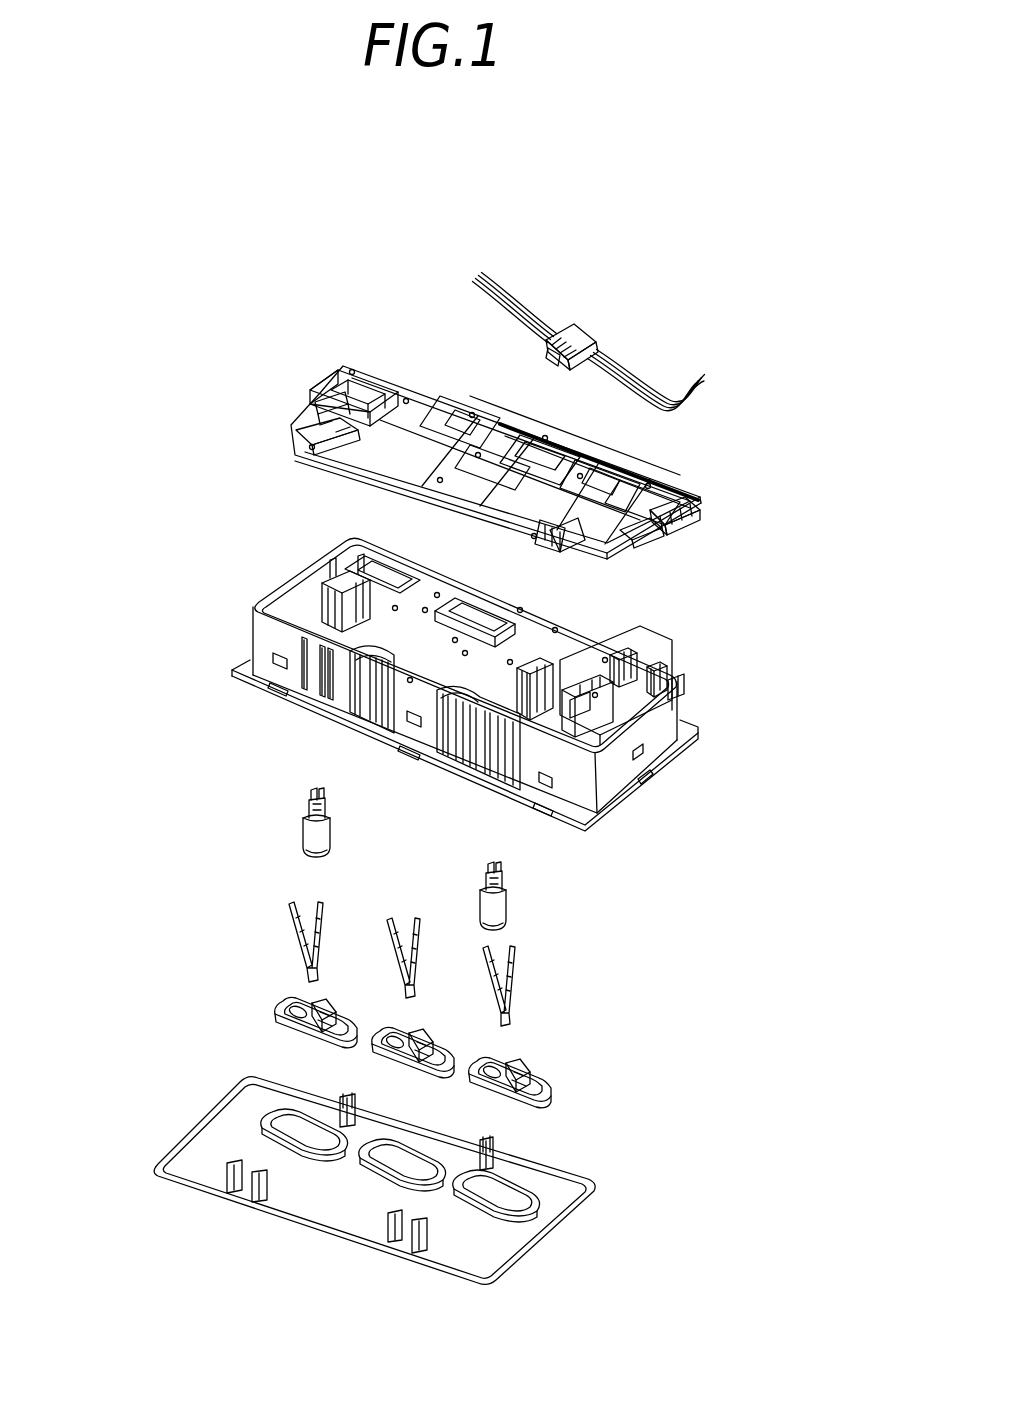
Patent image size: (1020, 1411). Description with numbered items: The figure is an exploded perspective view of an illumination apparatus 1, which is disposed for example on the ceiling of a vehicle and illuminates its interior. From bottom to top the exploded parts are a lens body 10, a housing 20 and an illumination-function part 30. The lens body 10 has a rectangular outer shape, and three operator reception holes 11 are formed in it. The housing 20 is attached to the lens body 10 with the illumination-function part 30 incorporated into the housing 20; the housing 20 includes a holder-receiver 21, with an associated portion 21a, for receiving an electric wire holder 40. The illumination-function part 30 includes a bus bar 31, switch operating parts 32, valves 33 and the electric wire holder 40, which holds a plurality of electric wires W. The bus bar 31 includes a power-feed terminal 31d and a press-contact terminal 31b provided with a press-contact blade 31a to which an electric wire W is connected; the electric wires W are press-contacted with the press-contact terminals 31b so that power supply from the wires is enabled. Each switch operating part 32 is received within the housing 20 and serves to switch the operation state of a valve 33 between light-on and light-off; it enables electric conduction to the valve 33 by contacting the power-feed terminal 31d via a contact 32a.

The illumination apparatus 1 is at (483, 190).
The lens body 10 is at (162, 1132).
The operator reception holes 11 is at (313, 1098).
The housing 20 is at (242, 585).
The holder-receiver 21 is at (646, 666).
The terminal hole 21a is at (672, 691).
The illumination-function part 30 is at (208, 280).
The bus bar 31 is at (316, 377).
The press-contact blade 31a is at (676, 524).
The press-contact terminal 31b is at (668, 541).
The power-feed terminal 31d is at (530, 543).
The switch operating part 32 is at (373, 1057).
The contact 32a is at (413, 914).
The valve 33 is at (302, 813).
The electric wire holder 40 is at (434, 310).
The electric wire W is at (712, 378).